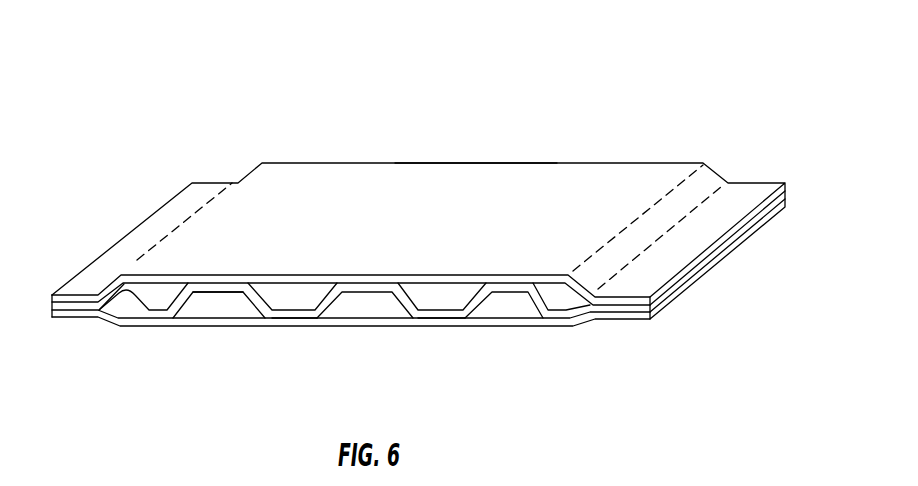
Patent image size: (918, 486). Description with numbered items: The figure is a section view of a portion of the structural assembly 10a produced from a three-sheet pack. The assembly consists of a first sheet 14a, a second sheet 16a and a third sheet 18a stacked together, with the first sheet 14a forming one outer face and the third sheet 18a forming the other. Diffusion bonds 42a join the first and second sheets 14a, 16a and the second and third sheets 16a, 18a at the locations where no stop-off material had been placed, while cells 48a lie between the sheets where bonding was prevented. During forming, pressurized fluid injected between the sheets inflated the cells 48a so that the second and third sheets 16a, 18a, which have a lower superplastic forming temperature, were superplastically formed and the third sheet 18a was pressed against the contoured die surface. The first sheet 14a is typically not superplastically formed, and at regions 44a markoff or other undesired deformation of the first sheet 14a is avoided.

The structural assembly 10a is at (272, 123).
The third sheet 18a is at (284, 277).
The first sheet 14a is at (358, 322).
The second sheet 16a is at (410, 303).
The diffusion bonds 42a is at (226, 283).
The cells 48a is at (207, 296).
The regions 44a is at (395, 163).